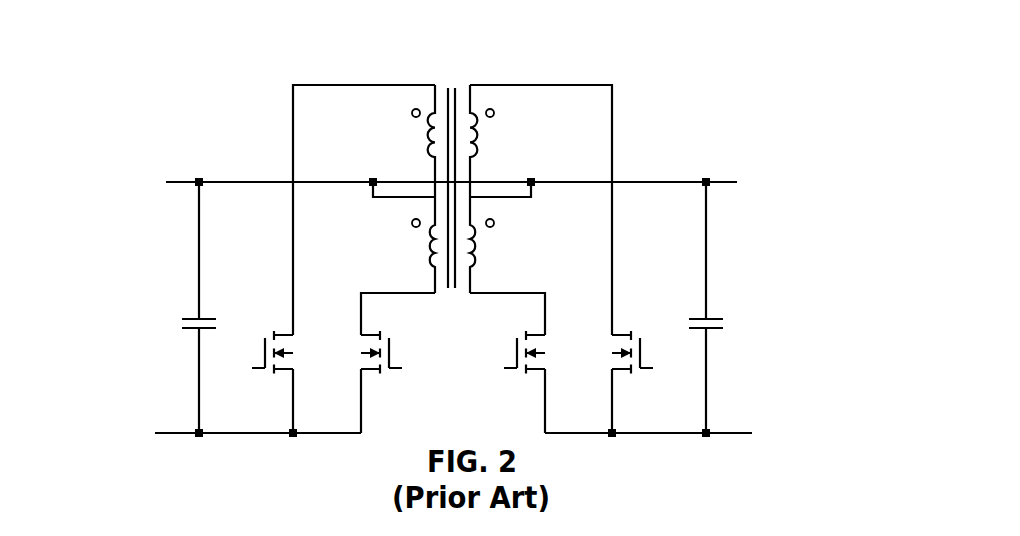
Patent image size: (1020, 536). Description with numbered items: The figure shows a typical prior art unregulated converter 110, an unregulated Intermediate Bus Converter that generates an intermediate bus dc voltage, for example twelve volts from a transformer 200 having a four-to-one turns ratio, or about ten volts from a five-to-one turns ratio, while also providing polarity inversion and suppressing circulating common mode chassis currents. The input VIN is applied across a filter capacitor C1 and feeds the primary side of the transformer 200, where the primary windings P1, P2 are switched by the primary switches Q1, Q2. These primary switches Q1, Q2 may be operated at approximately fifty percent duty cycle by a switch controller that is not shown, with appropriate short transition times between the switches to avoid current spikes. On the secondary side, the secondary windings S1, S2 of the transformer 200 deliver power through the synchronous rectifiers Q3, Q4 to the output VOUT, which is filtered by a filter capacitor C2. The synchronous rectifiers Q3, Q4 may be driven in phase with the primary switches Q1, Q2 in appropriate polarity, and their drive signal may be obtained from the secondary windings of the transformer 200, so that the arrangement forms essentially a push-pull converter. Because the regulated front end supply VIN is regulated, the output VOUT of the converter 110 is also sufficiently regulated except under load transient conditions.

The unregulated converter 110 is at (213, 118).
The transformer 200 is at (444, 80).
The filter capacitor C1 is at (214, 307).
The filter capacitor C2 is at (732, 307).
The primary switch Q1 is at (268, 377).
The primary switch Q2 is at (387, 377).
The synchronous rectifier Q3 is at (637, 377).
The synchronous rectifier Q4 is at (519, 377).
The primary winding P1 is at (404, 141).
The primary winding P2 is at (404, 245).
The secondary winding S1 is at (500, 141).
The secondary winding S2 is at (500, 245).